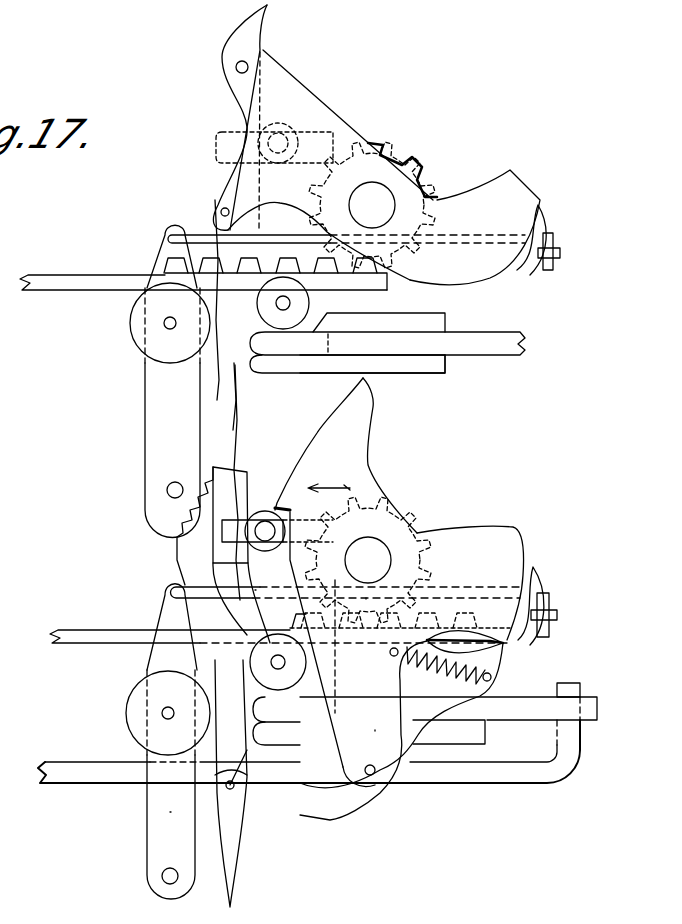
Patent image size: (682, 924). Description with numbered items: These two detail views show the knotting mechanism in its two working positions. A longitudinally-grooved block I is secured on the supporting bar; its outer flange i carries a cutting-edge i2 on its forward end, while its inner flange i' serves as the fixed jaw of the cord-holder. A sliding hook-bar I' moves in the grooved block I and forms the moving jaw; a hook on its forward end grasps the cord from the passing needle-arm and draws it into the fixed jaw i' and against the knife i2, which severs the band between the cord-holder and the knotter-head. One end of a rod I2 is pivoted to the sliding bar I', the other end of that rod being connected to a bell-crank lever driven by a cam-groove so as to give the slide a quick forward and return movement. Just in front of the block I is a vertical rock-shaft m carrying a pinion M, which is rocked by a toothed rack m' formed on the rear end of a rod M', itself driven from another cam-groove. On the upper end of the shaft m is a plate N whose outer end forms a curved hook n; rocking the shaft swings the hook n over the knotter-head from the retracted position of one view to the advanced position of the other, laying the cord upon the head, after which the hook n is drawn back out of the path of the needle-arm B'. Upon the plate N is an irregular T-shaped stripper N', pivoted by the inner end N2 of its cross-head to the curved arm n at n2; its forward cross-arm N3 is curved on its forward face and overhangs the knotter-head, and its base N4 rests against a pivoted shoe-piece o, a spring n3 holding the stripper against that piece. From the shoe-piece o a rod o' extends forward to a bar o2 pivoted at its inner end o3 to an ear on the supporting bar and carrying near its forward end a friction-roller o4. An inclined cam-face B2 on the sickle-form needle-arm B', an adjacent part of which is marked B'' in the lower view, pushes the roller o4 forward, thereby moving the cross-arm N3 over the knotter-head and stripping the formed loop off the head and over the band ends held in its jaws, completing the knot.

In FIG. 17, the curved hook n is at (323, 217).
In FIG. 18, the curved hook n is at (325, 598).
In FIG. 17, the vertical rock-shaft m is at (380, 171).
In FIG. 18, the vertical rock-shaft m is at (405, 528).
In FIG. 17, the pinion M is at (382, 201).
In FIG. 18, the pinion M is at (384, 560).
In FIG. 17, the plate N is at (454, 214).
In FIG. 17, the pivoted shoe-piece o is at (378, 240).
In FIG. 18, the pivoted shoe-piece o is at (371, 598).
In FIG. 17, the rod o' is at (319, 241).
In FIG. 18, the rod o' is at (261, 579).
In FIG. 17, the rod M' is at (203, 267).
In FIG. 18, the rod M' is at (280, 621).
In FIG. 17, the toothed rack m' is at (275, 264).
In FIG. 18, the toothed rack m' is at (387, 618).
In FIG. 17, the cutting-edge i2 is at (290, 303).
In FIG. 18, the cutting-edge i2 is at (278, 676).
In FIG. 17, the outer flange i is at (379, 311).
In FIG. 17, the inner flange i' is at (347, 375).
In FIG. 18, the inner flange i' is at (276, 721).
In FIG. 17, the longitudinally-grooved block I is at (372, 375).
In FIG. 18, the longitudinally-grooved block I is at (496, 713).
In FIG. 17, the sliding hook-bar I' is at (387, 359).
In FIG. 18, the sliding hook-bar I' is at (448, 685).
In FIG. 17, the friction-roller o4 is at (170, 381).
In FIG. 18, the friction-roller o4 is at (168, 741).
In FIG. 17, the pivoted bar o2 is at (170, 437).
In FIG. 18, the pivoted bar o2 is at (167, 819).
In FIG. 17, the inner end of pivoted bar o3 is at (173, 478).
In FIG. 18, the inner end of pivoted bar o3 is at (170, 865).
In FIG. 18, the forward cross-arm N3 is at (362, 455).
In FIG. 18, the base of stripper N4 is at (470, 589).
In FIG. 18, the inner end of cross-head N2 is at (401, 730).
In FIG. 18, the T-shaped stripper N' is at (355, 599).
In FIG. 18, the spring n3 is at (440, 665).
In FIG. 18, the pivot n2 is at (366, 735).
In FIG. 18, the needle-arm B' is at (223, 555).
In FIG. 18, the inclined cam-face B2 is at (272, 577).
In FIG. 18, the blade B'' is at (231, 783).
In FIG. 18, the rod I2 is at (309, 751).